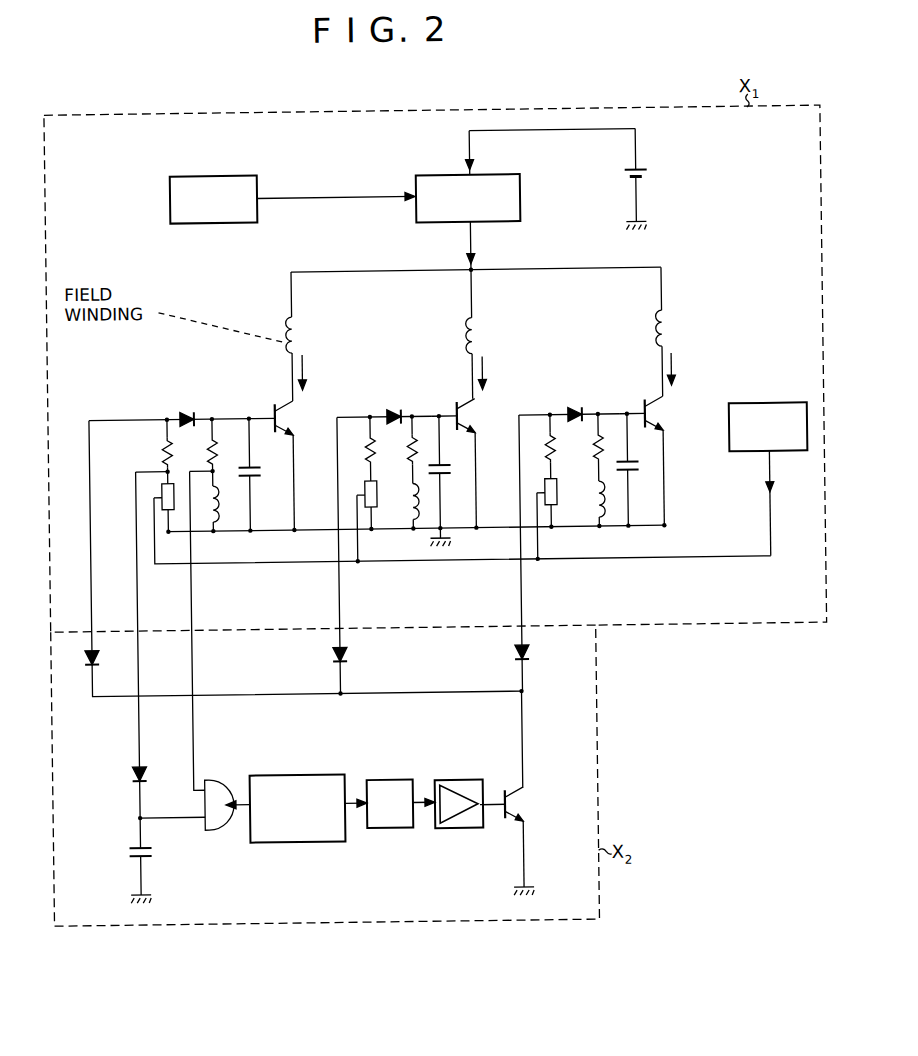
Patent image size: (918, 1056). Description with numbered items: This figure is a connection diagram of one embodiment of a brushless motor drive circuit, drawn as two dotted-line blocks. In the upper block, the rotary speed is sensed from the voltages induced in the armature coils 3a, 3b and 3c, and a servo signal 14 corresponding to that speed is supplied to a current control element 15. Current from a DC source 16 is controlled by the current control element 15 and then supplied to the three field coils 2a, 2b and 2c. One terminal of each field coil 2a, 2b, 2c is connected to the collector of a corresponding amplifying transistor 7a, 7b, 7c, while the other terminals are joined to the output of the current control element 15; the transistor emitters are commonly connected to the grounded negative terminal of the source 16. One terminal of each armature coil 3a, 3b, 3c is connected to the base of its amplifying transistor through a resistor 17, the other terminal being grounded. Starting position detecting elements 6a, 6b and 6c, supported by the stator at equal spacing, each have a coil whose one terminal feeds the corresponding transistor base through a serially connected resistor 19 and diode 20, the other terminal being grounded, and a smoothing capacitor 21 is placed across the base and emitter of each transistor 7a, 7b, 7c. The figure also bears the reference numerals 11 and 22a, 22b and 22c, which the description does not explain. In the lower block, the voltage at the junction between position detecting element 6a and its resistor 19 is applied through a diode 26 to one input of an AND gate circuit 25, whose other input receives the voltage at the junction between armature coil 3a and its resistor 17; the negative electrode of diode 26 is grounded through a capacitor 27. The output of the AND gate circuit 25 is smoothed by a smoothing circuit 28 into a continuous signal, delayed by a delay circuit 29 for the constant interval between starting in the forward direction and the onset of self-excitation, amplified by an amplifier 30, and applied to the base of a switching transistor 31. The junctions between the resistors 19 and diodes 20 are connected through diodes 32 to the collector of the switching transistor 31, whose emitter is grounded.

The field coil 2a is at (300, 335).
The field coil 2b is at (480, 336).
The field coil 2c is at (670, 336).
The armature coil 3a is at (217, 510).
The armature coil 3b is at (408, 510).
The armature coil 3c is at (604, 510).
The starting position detecting element 6a is at (174, 479).
The starting position detecting element 6b is at (377, 494).
The starting position detecting element 6c is at (557, 494).
The amplifying transistor 7a is at (294, 414).
The amplifying transistor 7b is at (476, 415).
The amplifying transistor 7c is at (665, 415).
The oscillator 11 is at (768, 406).
The servo signal 14 is at (353, 197).
The current control element 15 is at (524, 196).
The DC source 16 is at (645, 176).
The resistor 17 is at (220, 448).
The resistor 19 is at (163, 448).
The diode 20 is at (194, 405).
The smoothing capacitor 21 is at (261, 472).
The current direction 22a is at (321, 372).
The current direction 22b is at (502, 373).
The current direction 22c is at (691, 369).
The AND gate circuit 25 is at (208, 829).
The diode 26 is at (127, 772).
The capacitor 27 is at (126, 852).
The smoothing circuit 28 is at (298, 841).
The delay circuit 29 is at (392, 828).
The amplifier 30 is at (459, 829).
The switching transistor 31 is at (522, 807).
The diode 32 is at (98, 655).